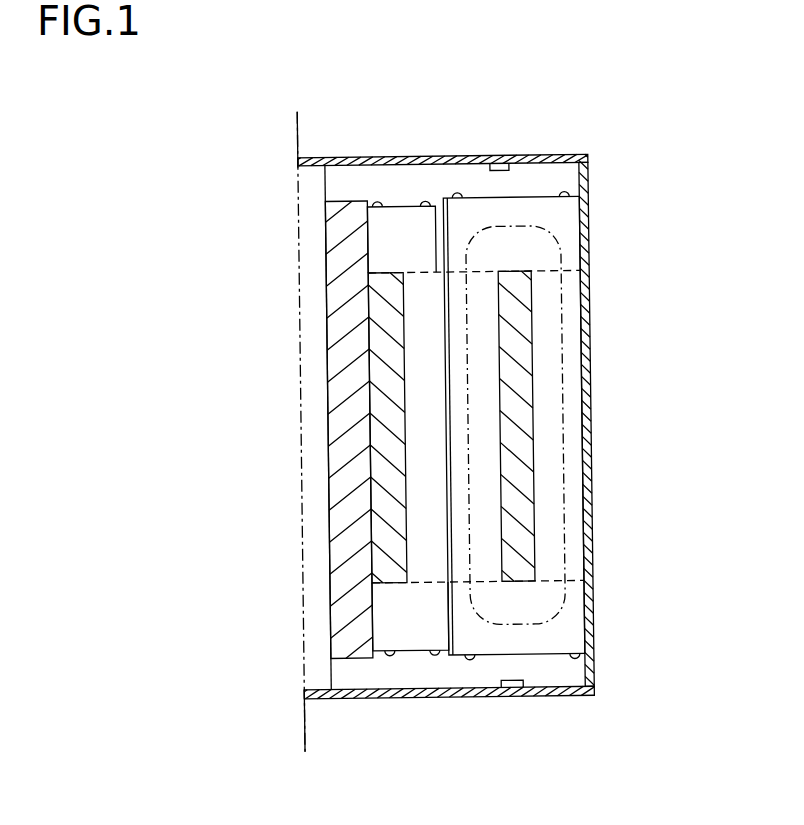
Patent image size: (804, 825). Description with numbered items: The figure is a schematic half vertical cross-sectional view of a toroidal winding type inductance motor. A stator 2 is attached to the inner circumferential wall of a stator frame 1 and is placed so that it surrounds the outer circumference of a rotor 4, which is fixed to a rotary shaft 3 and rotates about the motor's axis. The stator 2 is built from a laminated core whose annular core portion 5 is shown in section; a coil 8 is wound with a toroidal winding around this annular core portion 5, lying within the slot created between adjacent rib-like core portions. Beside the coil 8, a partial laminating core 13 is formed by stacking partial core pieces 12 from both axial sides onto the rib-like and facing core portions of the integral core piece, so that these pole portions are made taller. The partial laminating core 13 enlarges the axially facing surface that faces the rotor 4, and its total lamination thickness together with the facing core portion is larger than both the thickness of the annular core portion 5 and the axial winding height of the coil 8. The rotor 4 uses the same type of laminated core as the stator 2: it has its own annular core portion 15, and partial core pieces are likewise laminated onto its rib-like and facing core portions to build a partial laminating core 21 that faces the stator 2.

The stator frame 1 is at (528, 158).
The stator 2 is at (578, 389).
The rotary shaft 3 is at (313, 409).
The rotor 4 is at (308, 363).
The annular core portion 5 is at (527, 453).
The coil 8 is at (343, 550).
The partial core piece 12 is at (408, 642).
The partial laminating core 13 is at (568, 223).
The annular core portion 15 is at (380, 475).
The partial laminating core 21 is at (408, 222).